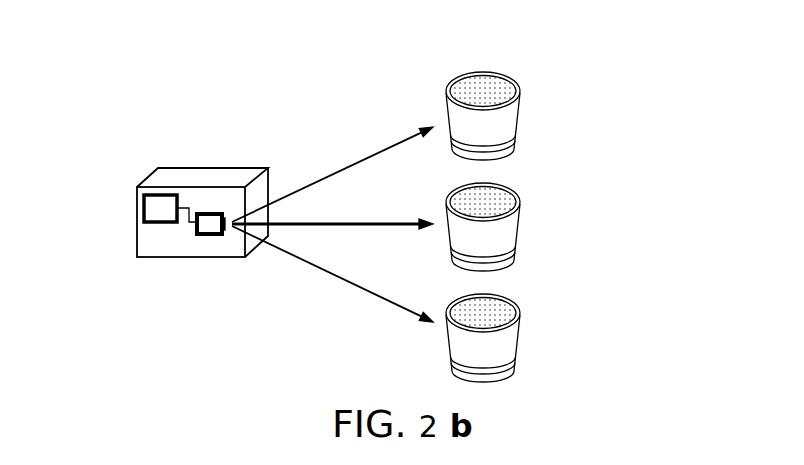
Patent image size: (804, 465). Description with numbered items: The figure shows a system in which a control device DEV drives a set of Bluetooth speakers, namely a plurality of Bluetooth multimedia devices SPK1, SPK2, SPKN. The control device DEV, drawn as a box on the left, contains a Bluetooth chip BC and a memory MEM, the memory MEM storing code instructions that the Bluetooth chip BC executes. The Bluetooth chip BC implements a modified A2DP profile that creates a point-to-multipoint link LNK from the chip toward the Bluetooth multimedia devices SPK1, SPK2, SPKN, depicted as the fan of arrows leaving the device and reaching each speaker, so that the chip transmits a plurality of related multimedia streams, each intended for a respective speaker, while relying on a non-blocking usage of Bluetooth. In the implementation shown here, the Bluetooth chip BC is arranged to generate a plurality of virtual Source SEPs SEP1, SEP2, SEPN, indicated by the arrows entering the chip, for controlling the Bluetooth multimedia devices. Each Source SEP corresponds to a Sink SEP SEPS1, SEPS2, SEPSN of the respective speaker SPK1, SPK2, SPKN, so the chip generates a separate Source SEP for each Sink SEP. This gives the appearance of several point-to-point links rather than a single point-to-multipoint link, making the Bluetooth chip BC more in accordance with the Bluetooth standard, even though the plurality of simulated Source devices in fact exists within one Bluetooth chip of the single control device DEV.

The device DEV is at (159, 239).
The memory MEM is at (131, 198).
The Bluetooth chip BC is at (203, 251).
The SEP SEP1 is at (195, 199).
The SEP SEP2 is at (209, 198).
The SEP SEPN is at (225, 199).
The point-to-multipoint link LNK is at (325, 188).
The Bluetooth multimedia device SPK1 is at (543, 109).
The Bluetooth multimedia device SPK2 is at (543, 220).
The Bluetooth multimedia device SPKN is at (543, 331).
The Sink SEP SEPS1 is at (541, 73).
The Sink SEP SEPS2 is at (541, 184).
The Sink SEP SEPSN is at (541, 295).